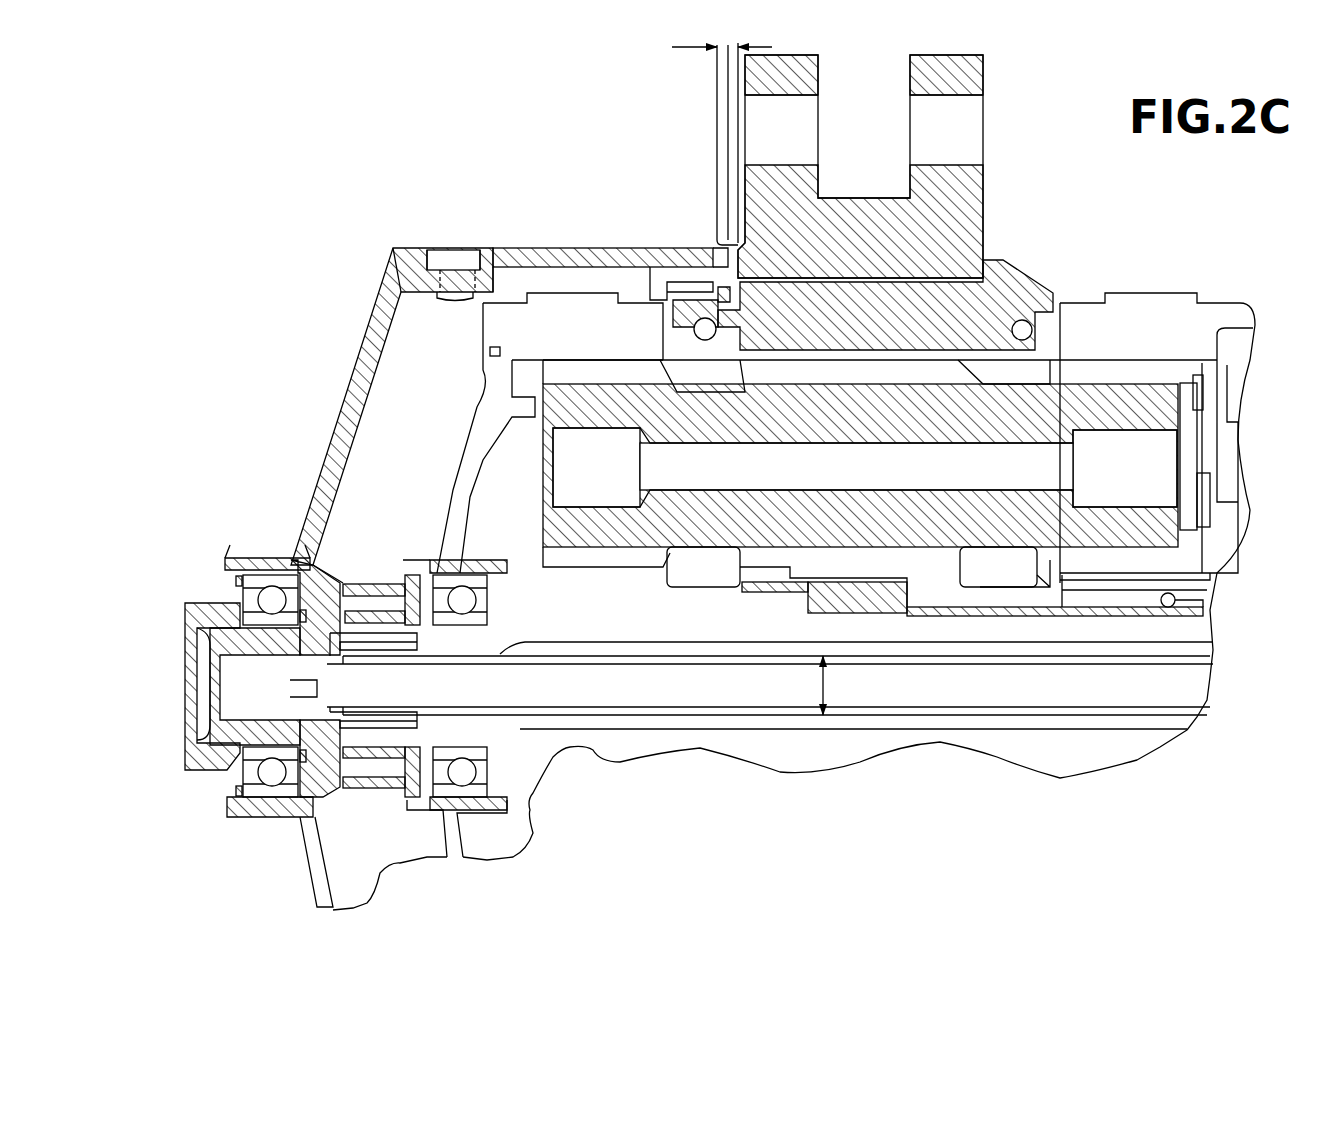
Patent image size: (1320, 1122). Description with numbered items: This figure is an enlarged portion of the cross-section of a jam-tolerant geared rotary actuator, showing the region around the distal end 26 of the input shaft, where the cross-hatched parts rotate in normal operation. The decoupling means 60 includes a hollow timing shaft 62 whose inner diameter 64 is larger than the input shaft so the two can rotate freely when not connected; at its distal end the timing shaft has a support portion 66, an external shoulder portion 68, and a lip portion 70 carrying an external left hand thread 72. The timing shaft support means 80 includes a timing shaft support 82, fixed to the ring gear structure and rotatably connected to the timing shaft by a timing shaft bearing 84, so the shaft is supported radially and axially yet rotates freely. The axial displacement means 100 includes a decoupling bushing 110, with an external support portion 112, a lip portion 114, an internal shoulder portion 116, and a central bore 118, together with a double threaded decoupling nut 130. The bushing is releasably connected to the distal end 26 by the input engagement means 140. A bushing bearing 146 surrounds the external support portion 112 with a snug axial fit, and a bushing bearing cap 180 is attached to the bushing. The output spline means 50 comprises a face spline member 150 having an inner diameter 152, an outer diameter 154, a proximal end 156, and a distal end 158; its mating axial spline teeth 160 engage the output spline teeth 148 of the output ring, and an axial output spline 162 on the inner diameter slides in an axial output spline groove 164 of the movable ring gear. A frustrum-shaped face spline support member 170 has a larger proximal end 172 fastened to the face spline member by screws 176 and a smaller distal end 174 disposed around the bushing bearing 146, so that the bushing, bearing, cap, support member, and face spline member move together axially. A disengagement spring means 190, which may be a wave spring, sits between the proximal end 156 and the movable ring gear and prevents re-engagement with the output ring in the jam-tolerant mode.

The distal end 26 is at (282, 688).
The output spline means 50 is at (677, 240).
The decoupling means 60 is at (183, 587).
The hollow timing shaft 62 is at (775, 641).
The inner diameter 64 is at (823, 684).
The support portion 66 is at (517, 641).
The external shoulder portion 68 is at (465, 652).
The lip portion 70 is at (419, 650).
The external left hand thread 72 is at (365, 645).
The timing shaft support means 80 is at (410, 365).
The timing shaft support 82 is at (458, 478).
The timing shaft bearing 84 is at (430, 557).
The axial displacement means 100 is at (323, 540).
The decoupling bushing 110 is at (270, 560).
The external support portion 112 is at (183, 633).
The lip portion 114 is at (370, 587).
The internal shoulder portion 116 is at (303, 577).
The central bore 118 is at (230, 670).
The double threaded decoupling nut 130 is at (387, 605).
The input engagement means 140 is at (247, 737).
The bushing bearing 146 is at (228, 560).
The output spline teeth 148 is at (712, 243).
The face spline member 150 is at (543, 247).
The inner diameter 152 is at (548, 270).
The outer diameter 154 is at (507, 247).
The proximal end 156 is at (684, 243).
The distal end 158 is at (413, 248).
The mating axial spline teeth 160 is at (713, 247).
The axial output spline 162 is at (663, 280).
The axial output spline groove 164 is at (650, 293).
The face spline support member 170 is at (379, 285).
The proximal end 172 is at (390, 248).
The distal end 174 is at (230, 567).
The screws 176 is at (447, 248).
The bushing bearing cap 180 is at (200, 617).
The disengagement spring means 190 is at (737, 283).